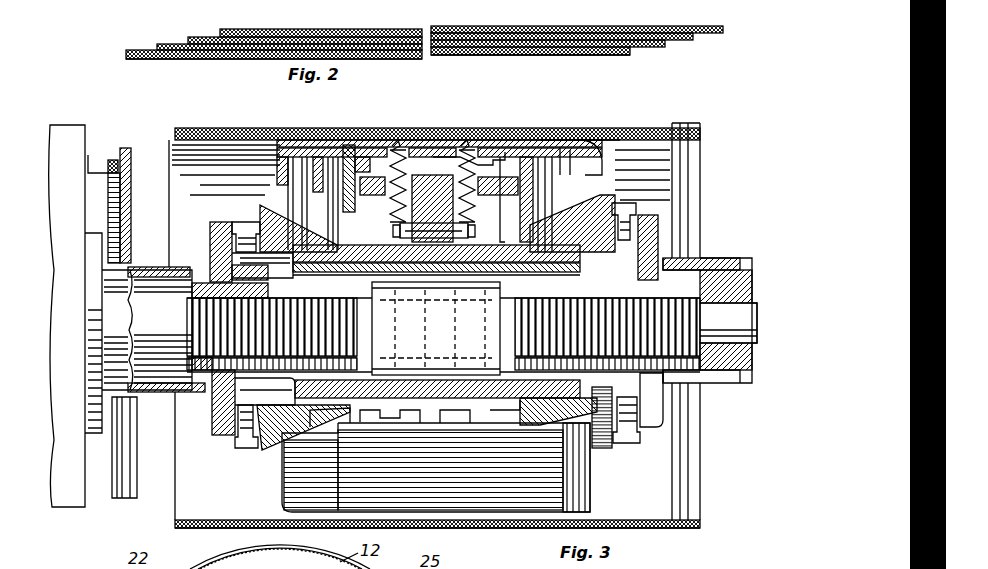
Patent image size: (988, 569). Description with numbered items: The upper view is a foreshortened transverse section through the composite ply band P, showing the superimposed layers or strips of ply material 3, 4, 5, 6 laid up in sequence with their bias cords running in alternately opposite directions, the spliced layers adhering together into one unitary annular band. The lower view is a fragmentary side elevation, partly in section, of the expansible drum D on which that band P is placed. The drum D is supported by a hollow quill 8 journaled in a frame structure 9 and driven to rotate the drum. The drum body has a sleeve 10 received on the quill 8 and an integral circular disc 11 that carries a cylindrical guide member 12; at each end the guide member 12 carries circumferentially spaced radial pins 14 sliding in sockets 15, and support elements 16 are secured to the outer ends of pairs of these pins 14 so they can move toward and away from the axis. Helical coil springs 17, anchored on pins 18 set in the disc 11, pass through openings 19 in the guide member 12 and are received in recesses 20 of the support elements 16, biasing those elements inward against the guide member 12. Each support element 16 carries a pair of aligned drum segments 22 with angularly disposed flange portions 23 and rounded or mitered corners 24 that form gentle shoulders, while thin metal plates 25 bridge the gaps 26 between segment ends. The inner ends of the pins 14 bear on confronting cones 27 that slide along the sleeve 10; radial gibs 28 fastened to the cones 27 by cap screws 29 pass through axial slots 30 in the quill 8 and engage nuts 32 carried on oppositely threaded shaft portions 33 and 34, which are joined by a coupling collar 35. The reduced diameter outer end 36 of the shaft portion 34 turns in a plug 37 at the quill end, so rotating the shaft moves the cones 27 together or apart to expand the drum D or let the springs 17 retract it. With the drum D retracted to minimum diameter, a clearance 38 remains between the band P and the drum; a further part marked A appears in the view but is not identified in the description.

In FIG. 2, the ply material layer 3 is at (128, 50).
In FIG. 2, the ply material layer 4 is at (160, 44).
In FIG. 3, the ply material layer 4 is at (508, 108).
In FIG. 2, the ply material layer 5 is at (192, 37).
In FIG. 2, the ply material layer 6 is at (230, 29).
In FIG. 2, the composite annular ply band P is at (522, 26).
In FIG. 3, the composite annular ply band P is at (666, 125).
In FIG. 3, the quill 8 is at (730, 258).
In FIG. 3, the frame structure 9 is at (66, 125).
In FIG. 3, the sleeve 10 is at (500, 250).
In FIG. 3, the circular disc 11 is at (482, 192).
In FIG. 3, the cylindrical guide member 12 is at (355, 185).
In FIG. 3, the radial pins 14 is at (333, 232).
In FIG. 3, the sockets 15 is at (570, 205).
In FIG. 3, the support elements 16 is at (500, 140).
In FIG. 3, the helical coil springs 17 is at (480, 148).
In FIG. 3, the pins 18 is at (465, 208).
In FIG. 3, the openings 19 is at (398, 147).
In FIG. 3, the recesses 20 is at (464, 147).
In FIG. 3, the drum segments 22 is at (300, 140).
In FIG. 3, the flange portions 23 is at (603, 155).
In FIG. 3, the rounded corners 24 is at (592, 138).
In FIG. 3, the thin metal plates 25 is at (350, 140).
In FIG. 3, the gaps 26 is at (460, 117).
In FIG. 3, the cones 27 is at (262, 210).
In FIG. 3, the radial gibs 28 is at (658, 236).
In FIG. 3, the cap screws 29 is at (640, 208).
In FIG. 3, the axial slots 30 is at (673, 395).
In FIG. 3, the nuts 32 is at (203, 283).
In FIG. 3, the threaded shaft portion 33 is at (178, 322).
In FIG. 3, the threaded shaft portion 34 is at (660, 316).
In FIG. 3, the coupling collar 35 is at (375, 300).
In FIG. 3, the reduced diameter outer end 36 is at (757, 328).
In FIG. 3, the plug 37 is at (752, 355).
In FIG. 3, the clearance 38 is at (470, 529).
In FIG. 3, the seal A is at (112, 160).
In FIG. 3, the expansible drum D is at (268, 160).